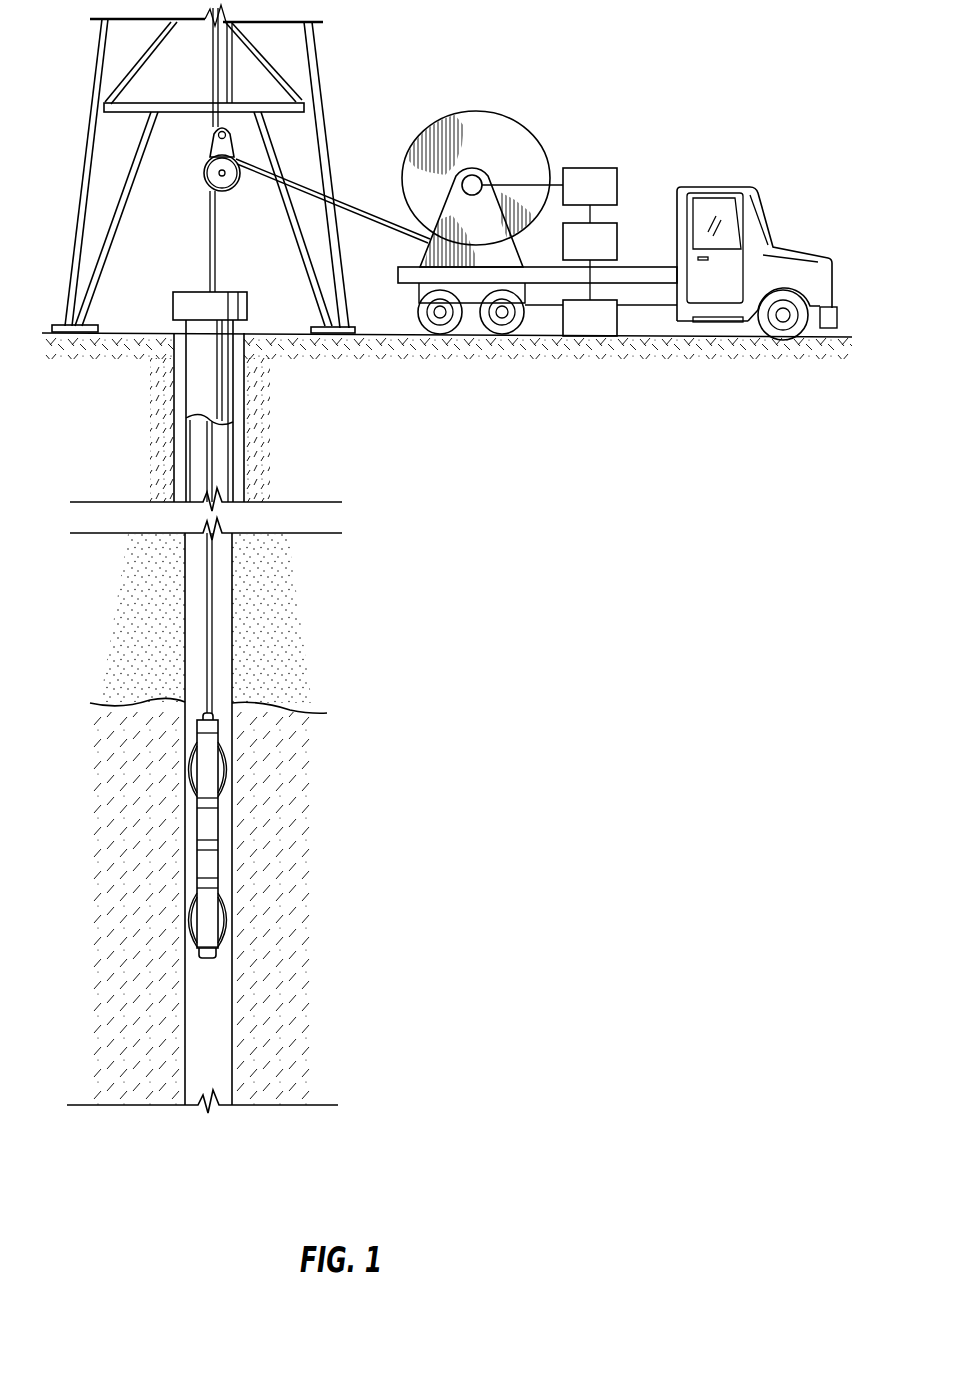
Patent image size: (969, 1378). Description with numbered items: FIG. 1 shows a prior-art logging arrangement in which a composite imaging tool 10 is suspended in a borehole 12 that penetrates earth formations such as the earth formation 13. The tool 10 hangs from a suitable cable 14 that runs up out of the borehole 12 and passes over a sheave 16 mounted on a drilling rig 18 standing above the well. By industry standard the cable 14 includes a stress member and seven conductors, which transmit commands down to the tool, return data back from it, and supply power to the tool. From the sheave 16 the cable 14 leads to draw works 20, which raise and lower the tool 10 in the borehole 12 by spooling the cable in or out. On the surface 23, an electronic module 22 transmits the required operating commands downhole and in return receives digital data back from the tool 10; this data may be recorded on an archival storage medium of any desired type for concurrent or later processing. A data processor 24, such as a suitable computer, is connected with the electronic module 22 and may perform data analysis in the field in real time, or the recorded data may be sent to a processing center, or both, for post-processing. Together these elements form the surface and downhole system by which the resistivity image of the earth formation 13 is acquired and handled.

The composite imaging tool 10 is at (232, 860).
The borehole 12 is at (233, 644).
The earth formations 13 is at (352, 689).
The cable 14 is at (216, 251).
The sheave 16 is at (207, 163).
The drilling rig 18 is at (93, 97).
The draw works 20 is at (457, 113).
The electronic module 22 is at (618, 172).
The surface 23 is at (412, 336).
The data processor 24 is at (618, 236).